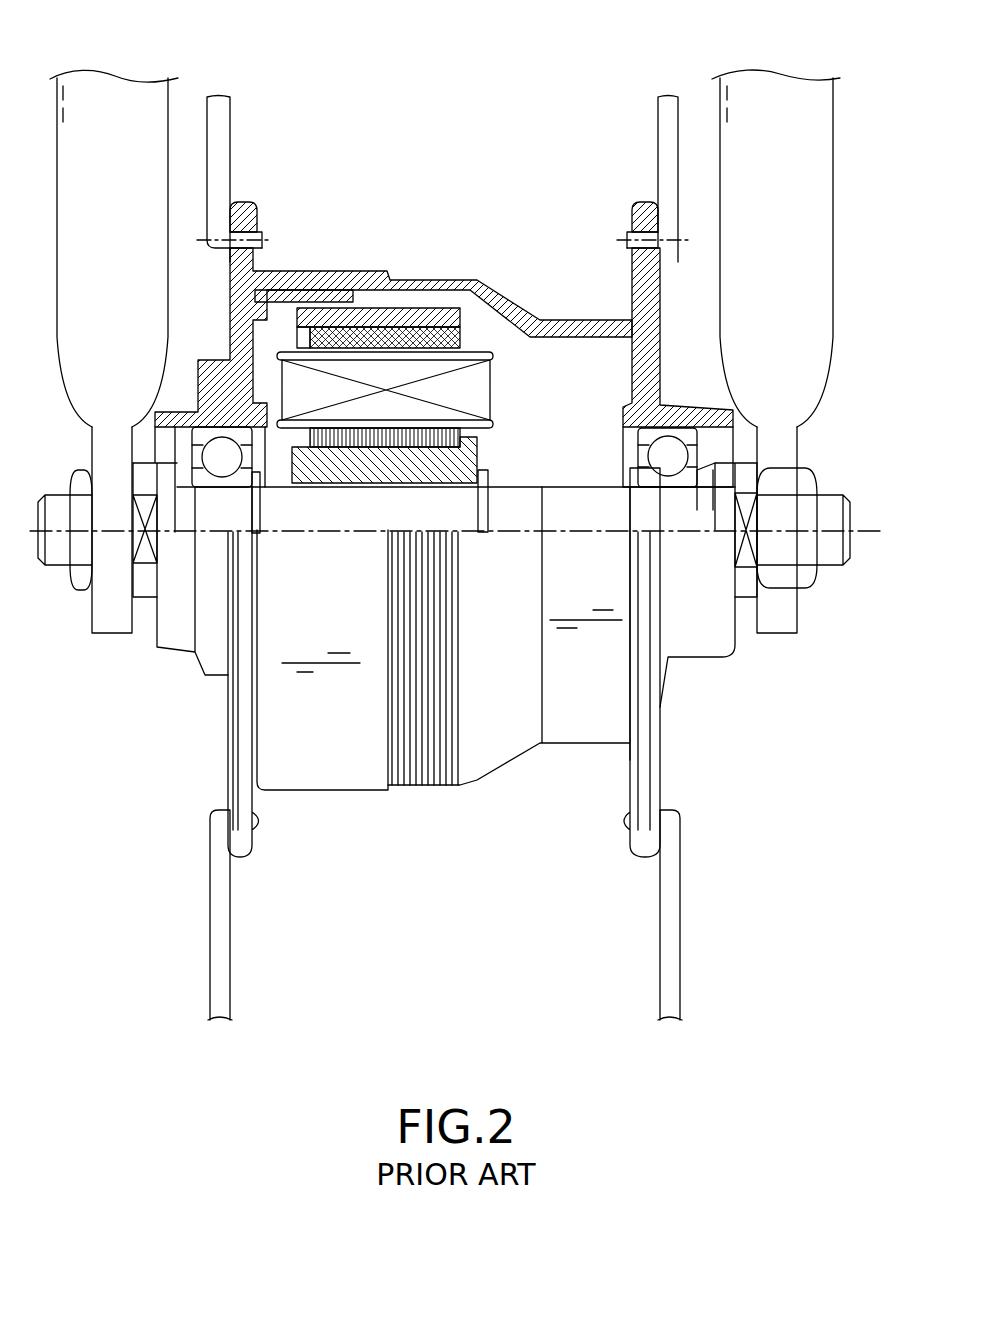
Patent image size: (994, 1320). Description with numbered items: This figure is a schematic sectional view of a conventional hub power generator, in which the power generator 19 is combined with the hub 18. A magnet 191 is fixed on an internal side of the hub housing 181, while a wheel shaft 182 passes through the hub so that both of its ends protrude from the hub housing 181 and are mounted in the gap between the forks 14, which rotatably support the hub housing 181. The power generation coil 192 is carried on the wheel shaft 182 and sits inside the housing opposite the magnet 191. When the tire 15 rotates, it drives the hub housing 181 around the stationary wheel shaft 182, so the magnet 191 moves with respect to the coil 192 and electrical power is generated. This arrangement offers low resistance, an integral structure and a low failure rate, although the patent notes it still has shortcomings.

The forks 14 is at (780, 97).
The tire 15 is at (230, 145).
The hub 18 is at (600, 155).
The hub housing 181 is at (493, 289).
The wheel shaft 182 is at (563, 510).
The power generator 19 is at (420, 175).
The magnet 191 is at (388, 335).
The coil 192 is at (343, 412).